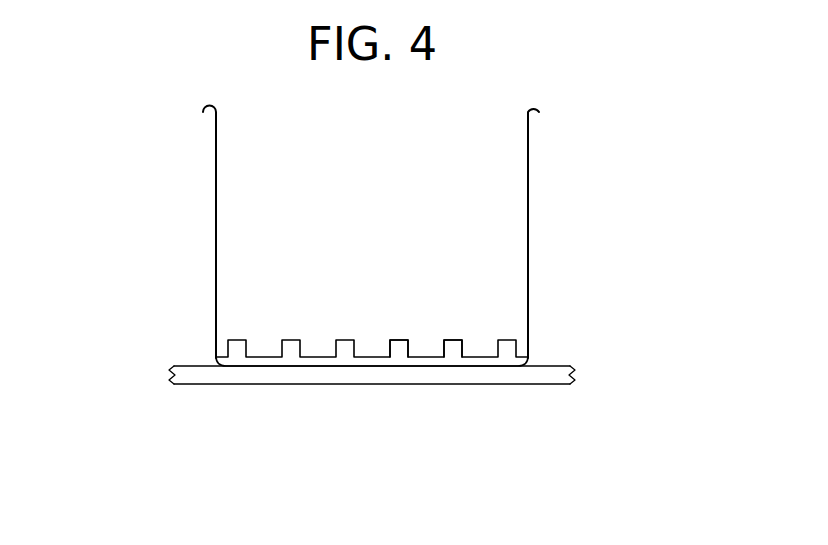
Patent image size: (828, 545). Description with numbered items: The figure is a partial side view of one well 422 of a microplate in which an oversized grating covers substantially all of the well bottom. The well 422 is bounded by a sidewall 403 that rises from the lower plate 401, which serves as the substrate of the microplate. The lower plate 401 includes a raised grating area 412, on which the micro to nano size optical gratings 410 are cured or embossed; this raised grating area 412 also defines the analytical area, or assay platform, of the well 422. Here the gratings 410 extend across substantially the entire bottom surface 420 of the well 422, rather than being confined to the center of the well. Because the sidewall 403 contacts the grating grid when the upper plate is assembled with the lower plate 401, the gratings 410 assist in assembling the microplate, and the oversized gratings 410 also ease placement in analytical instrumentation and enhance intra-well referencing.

The sidewall 403 is at (215, 160).
The well 422 is at (601, 228).
The raised grating area 412 is at (513, 280).
The grating 410 is at (457, 339).
The lower plate 401 is at (545, 378).
The bottom surface 420 is at (372, 367).